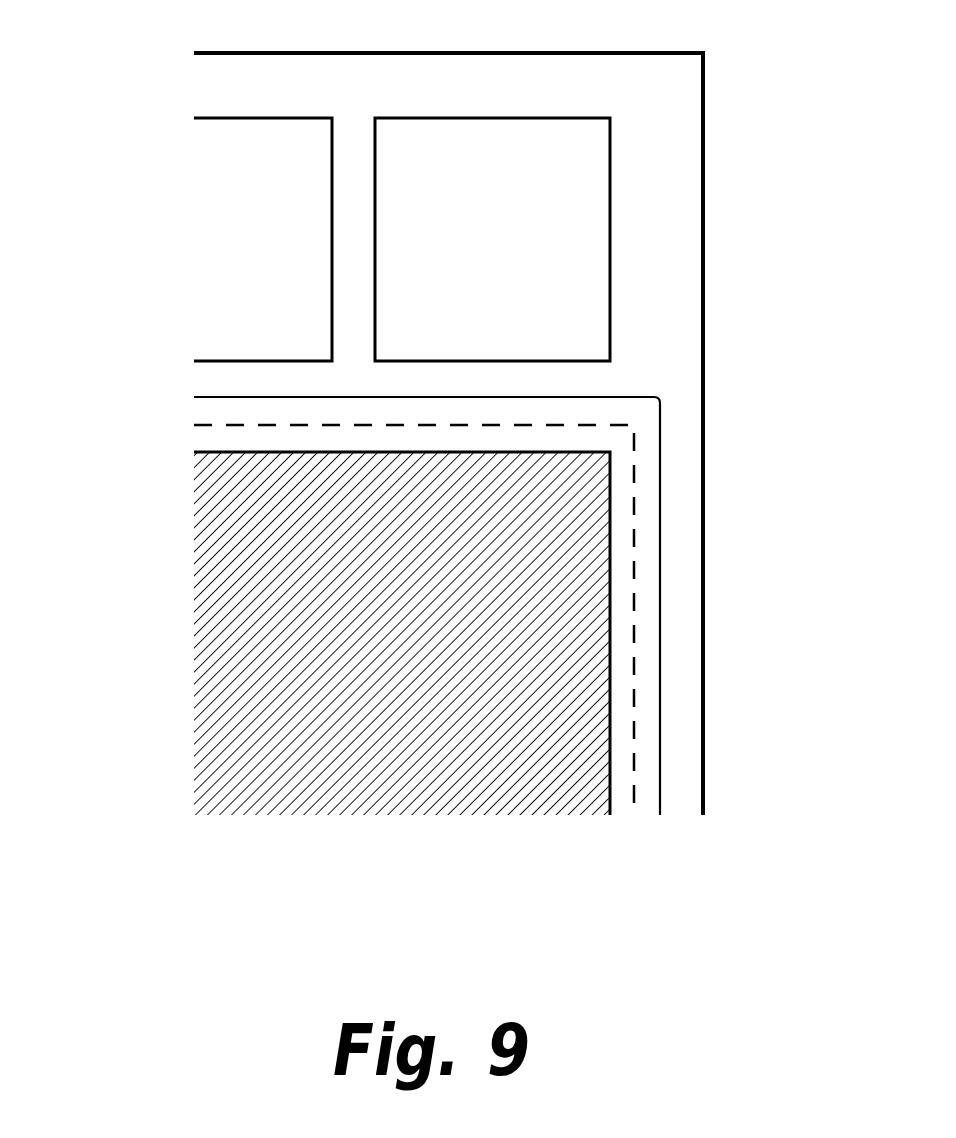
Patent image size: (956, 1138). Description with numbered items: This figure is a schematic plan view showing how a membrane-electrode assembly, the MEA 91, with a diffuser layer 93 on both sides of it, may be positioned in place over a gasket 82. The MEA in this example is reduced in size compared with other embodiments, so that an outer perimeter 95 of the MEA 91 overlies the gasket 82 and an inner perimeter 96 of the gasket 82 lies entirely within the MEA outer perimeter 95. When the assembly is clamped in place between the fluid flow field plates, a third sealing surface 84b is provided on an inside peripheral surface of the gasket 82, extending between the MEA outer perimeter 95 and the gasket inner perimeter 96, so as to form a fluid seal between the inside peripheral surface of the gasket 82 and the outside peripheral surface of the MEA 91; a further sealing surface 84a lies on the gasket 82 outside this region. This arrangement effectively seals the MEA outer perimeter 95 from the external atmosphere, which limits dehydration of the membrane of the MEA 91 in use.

The gasket 82 is at (653, 244).
The MEA outer perimeter 95 is at (638, 393).
The gasket inner perimeter 96 is at (633, 483).
The outer region 84a is at (675, 534).
The third sealing surface 84b is at (648, 623).
The diffuser layer 93 is at (578, 732).
The MEA 91 is at (182, 512).